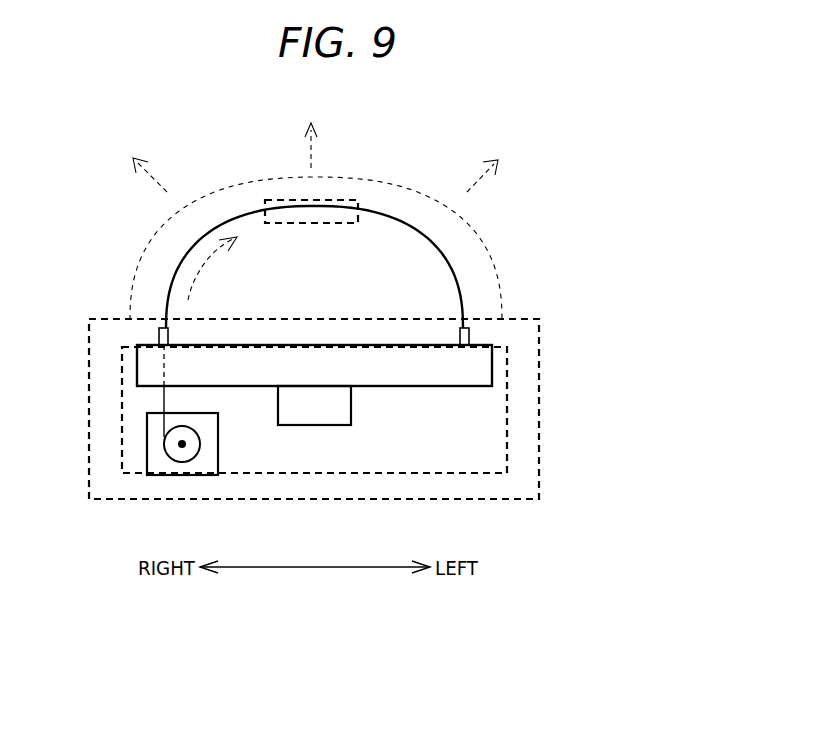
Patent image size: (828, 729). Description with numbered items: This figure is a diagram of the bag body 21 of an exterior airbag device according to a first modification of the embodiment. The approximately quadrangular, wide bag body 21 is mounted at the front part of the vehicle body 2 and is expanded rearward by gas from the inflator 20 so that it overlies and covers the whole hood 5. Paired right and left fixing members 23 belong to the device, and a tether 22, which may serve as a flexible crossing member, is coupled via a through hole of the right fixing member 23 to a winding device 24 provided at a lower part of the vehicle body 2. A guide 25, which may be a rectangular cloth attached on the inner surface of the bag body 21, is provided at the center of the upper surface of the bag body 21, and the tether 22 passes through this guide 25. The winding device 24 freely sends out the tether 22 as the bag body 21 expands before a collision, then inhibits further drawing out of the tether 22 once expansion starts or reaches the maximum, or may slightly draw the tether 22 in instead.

The vehicle body 2 is at (539, 472).
The hood 5 is at (133, 333).
The inflator 20 is at (351, 413).
The bag body 21 is at (492, 360).
The tether 22 is at (453, 280).
The fixing members 23 is at (158, 340).
The winding device 24 is at (155, 463).
The guide 25 is at (348, 203).